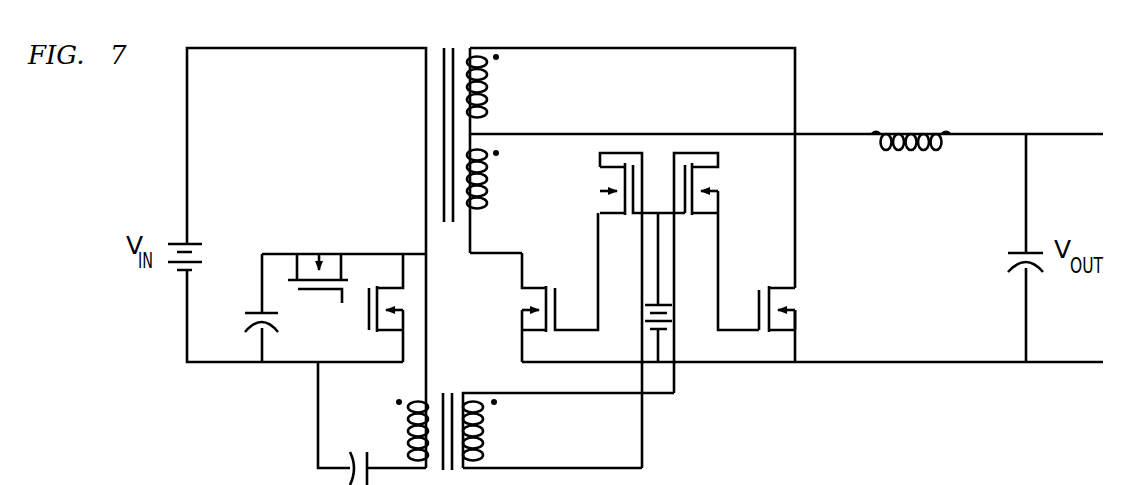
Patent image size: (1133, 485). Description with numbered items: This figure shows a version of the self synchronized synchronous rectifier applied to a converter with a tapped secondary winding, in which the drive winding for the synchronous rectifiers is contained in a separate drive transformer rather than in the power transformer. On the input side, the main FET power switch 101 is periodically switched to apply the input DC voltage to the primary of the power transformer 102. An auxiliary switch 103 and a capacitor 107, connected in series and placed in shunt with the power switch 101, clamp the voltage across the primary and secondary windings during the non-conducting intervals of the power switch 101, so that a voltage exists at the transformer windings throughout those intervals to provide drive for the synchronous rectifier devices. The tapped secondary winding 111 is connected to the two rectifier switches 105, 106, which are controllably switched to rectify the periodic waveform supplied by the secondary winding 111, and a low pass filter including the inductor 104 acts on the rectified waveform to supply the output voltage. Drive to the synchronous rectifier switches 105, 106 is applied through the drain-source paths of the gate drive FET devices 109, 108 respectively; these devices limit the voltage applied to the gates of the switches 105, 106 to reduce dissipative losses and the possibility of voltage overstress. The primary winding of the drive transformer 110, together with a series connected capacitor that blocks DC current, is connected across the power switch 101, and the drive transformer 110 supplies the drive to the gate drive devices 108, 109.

The main FET power switch 101 is at (367, 330).
The power transformer 102 is at (441, 48).
The auxiliary switch 103 is at (307, 254).
The inductor 104 is at (945, 148).
The rectifier switch 105 is at (797, 318).
The rectifier switch 106 is at (520, 311).
The capacitor 107 is at (255, 313).
The gate drive FET device 108 is at (598, 212).
The gate drive FET device 109 is at (720, 204).
The drive transformer 110 is at (486, 430).
The secondary winding 111 is at (487, 208).